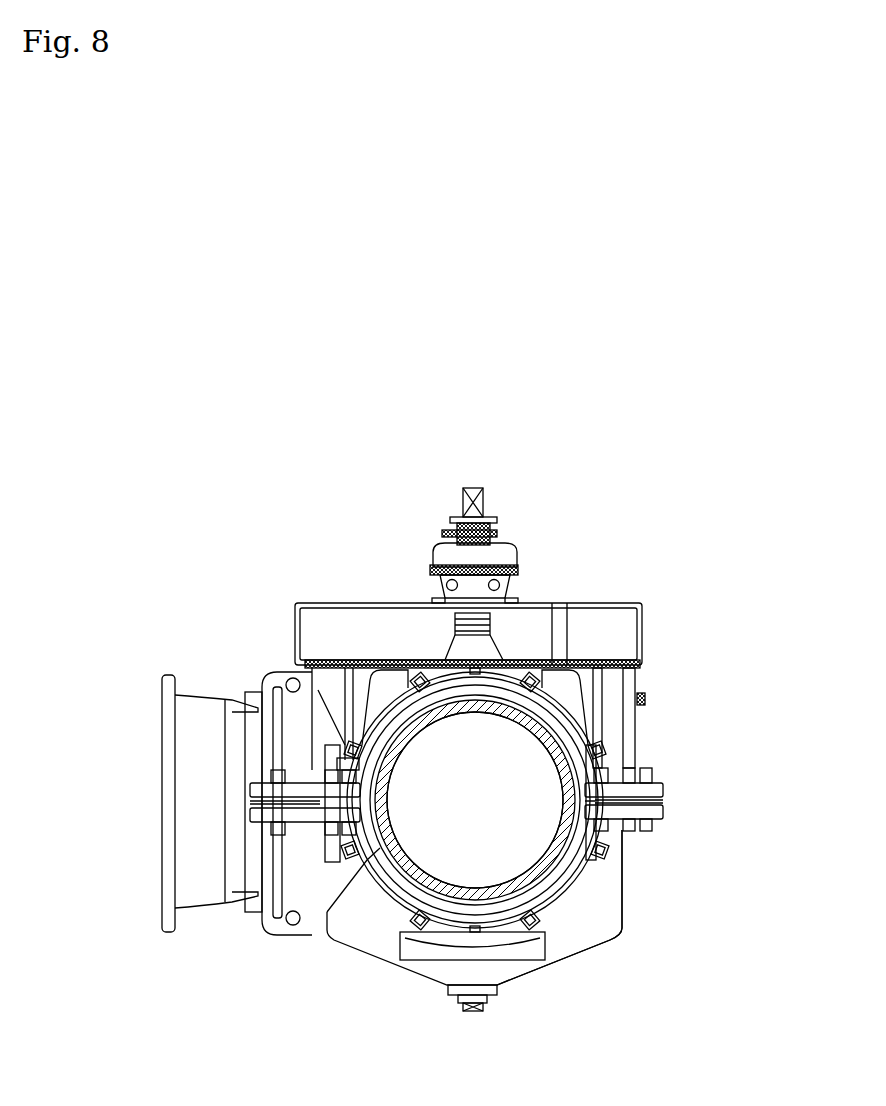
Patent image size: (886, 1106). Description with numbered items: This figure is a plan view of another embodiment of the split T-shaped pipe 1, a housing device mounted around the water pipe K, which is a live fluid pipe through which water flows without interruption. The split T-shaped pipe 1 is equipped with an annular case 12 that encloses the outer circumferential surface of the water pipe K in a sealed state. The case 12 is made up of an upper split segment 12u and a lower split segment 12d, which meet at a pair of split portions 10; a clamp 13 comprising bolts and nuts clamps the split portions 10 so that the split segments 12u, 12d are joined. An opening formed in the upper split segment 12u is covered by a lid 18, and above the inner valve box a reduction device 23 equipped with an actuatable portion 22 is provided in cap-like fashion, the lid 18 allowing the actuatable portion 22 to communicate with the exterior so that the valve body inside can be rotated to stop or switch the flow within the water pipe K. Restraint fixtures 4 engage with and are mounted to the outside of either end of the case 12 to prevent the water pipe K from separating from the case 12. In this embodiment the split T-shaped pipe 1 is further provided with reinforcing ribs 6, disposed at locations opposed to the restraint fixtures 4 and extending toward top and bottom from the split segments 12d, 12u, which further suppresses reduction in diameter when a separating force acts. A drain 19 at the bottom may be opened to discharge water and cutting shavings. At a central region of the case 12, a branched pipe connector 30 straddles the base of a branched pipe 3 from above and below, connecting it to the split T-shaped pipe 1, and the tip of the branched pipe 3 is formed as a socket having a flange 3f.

The split T-shaped pipe 1 is at (296, 560).
The branched pipe 3 is at (208, 910).
The flange 3f is at (168, 675).
The restraint fixture 4 is at (370, 905).
The reinforcing rib 6 is at (575, 690).
The split portion 10 is at (682, 797).
The case 12 is at (340, 945).
The upper split segment 12u is at (636, 735).
The lower split segment 12d is at (622, 918).
The clamp 13 is at (650, 833).
The lid 18 is at (590, 603).
The drain 19 is at (475, 1012).
The actuatable portion 22 is at (462, 497).
The reduction device 23 is at (432, 541).
The branched pipe connector 30 is at (250, 930).
The water pipe K is at (477, 890).